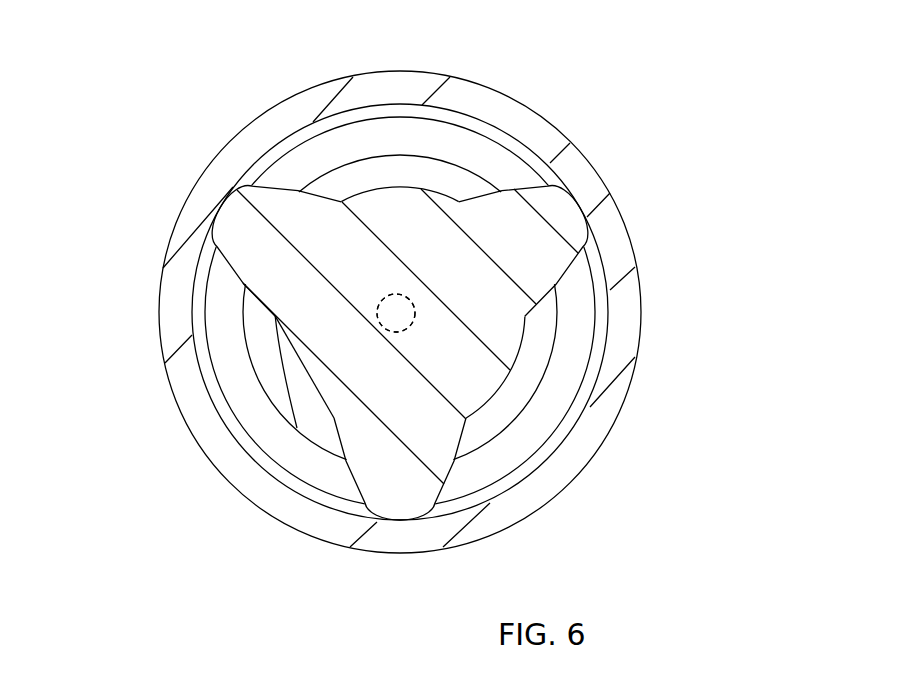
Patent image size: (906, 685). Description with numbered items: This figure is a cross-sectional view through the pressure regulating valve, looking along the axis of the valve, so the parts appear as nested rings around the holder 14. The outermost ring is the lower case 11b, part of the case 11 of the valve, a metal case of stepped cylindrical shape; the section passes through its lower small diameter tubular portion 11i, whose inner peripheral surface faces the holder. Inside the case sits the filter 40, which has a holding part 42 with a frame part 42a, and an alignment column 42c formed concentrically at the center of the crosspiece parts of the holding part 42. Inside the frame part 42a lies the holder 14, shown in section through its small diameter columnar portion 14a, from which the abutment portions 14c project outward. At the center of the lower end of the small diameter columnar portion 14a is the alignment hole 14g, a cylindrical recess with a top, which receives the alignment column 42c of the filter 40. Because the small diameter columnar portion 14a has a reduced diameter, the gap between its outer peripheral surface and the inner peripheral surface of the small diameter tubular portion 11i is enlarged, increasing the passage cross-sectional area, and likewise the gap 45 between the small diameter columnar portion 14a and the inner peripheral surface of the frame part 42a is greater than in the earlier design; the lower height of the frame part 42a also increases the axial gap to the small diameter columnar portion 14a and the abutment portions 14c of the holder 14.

The housing 11 is at (400, 294).
The lower case 11b is at (233, 135).
The lower small diameter tubular portion 11i is at (300, 110).
The holder 14 is at (448, 160).
The small diameter columnar portion 14a is at (502, 333).
The abutment portions 14c is at (560, 207).
The alignment hole 14g is at (380, 316).
The filter 40 is at (533, 236).
The holding part 42 is at (588, 308).
The frame part 42a is at (582, 330).
The alignment column 42c is at (385, 322).
The gap 45 is at (262, 356).